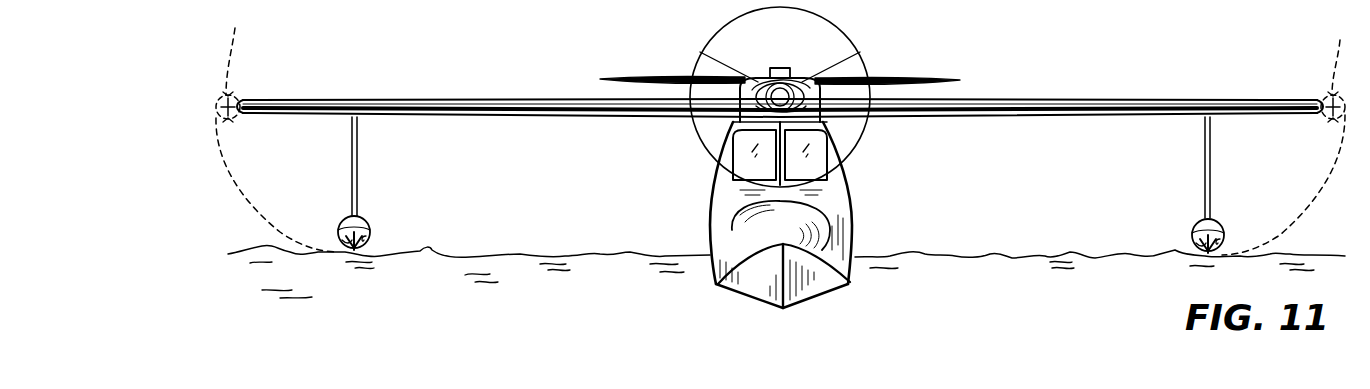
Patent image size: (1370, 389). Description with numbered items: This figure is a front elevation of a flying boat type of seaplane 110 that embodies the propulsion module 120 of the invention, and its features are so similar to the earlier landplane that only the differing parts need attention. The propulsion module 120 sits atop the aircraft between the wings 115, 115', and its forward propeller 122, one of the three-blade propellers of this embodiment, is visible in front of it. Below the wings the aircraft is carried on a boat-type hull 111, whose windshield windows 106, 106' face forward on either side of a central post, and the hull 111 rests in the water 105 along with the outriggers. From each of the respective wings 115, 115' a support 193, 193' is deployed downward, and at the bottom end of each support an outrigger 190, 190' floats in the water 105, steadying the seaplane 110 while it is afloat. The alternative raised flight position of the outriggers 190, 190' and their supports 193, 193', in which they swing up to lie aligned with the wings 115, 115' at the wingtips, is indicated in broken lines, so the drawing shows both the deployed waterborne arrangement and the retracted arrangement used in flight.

The water 105 is at (982, 260).
The windshield window 106 is at (688, 157).
The windshield window 106' is at (882, 155).
The seaplane 110 is at (680, 44).
The hull 111 is at (872, 212).
The wing 115 is at (1051, 72).
The wing 115' is at (508, 75).
The propulsion module 120 is at (840, 82).
The forward propeller 122 is at (838, 58).
The outrigger 190 is at (260, 127).
The outrigger 190' is at (1283, 134).
The support 193 is at (320, 125).
The support 193' is at (1144, 167).